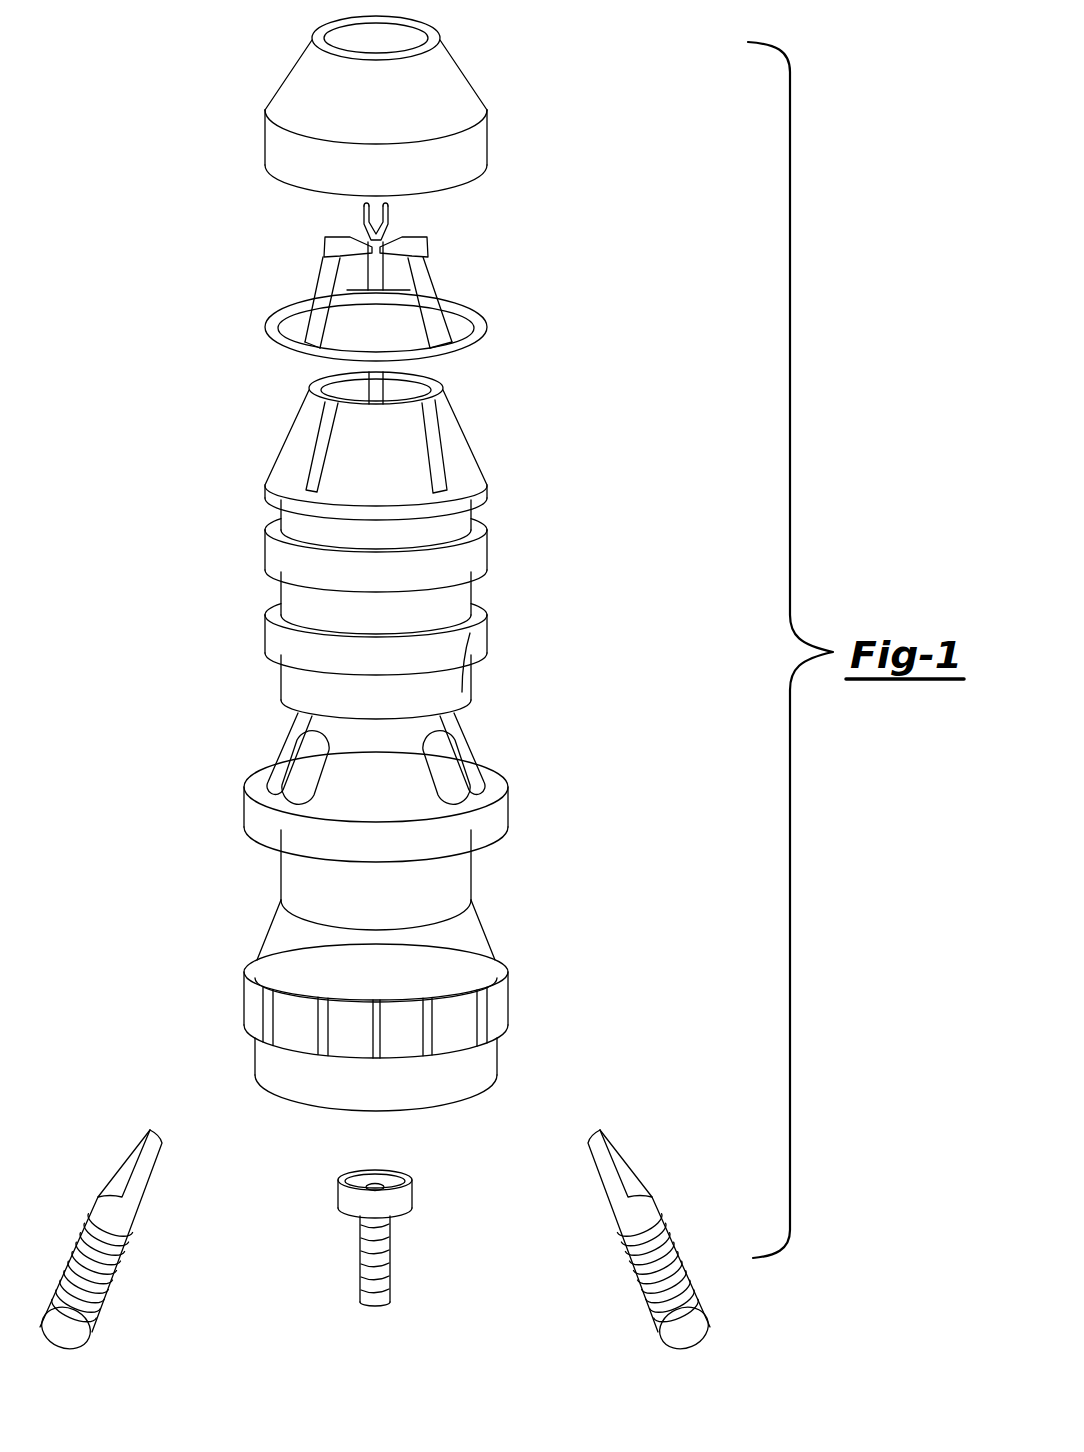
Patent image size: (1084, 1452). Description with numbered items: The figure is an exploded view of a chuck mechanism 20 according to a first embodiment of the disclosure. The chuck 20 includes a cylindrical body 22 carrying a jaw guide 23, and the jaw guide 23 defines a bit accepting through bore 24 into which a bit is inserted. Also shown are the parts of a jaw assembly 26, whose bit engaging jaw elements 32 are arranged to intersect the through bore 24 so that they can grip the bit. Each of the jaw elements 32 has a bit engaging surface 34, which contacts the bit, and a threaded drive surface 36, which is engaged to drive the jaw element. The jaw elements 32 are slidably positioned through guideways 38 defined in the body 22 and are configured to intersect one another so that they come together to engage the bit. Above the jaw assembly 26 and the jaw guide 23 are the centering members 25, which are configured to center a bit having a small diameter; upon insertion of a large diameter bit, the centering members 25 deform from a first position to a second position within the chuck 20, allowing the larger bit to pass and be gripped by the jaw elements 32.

The chuck mechanism 20 is at (633, 586).
The cylindrical body 22 is at (467, 888).
The jaw guide 23 is at (493, 508).
The bit accepting through bore 24 is at (408, 392).
The centering members 25 is at (424, 276).
The jaw assembly 26 is at (483, 673).
The jaw elements 32 is at (118, 1207).
The bit engaging surface 34 is at (126, 1157).
The threaded drive surface 36 is at (88, 1272).
The guideways 38 is at (444, 722).